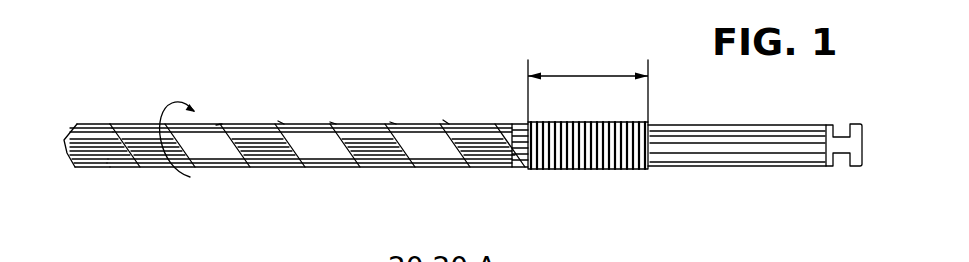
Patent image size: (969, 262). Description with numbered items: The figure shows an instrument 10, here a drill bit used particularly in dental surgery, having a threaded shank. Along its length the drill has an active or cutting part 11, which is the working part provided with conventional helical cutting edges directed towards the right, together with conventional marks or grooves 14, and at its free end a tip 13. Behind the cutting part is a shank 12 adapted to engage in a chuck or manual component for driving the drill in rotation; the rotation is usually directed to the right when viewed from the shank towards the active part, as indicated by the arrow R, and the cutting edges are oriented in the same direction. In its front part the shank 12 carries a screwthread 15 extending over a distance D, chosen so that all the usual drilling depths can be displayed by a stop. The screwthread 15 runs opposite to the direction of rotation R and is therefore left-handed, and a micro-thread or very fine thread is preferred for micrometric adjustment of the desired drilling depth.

The instrument 10 is at (461, 148).
The active or cutting part 11 is at (207, 162).
The shank 12 is at (767, 143).
The drill tip 13 is at (61, 148).
The marks or grooves 14 is at (443, 120).
The screwthread 15 is at (587, 169).
The arrow R is at (177, 125).
The distance D is at (588, 85).